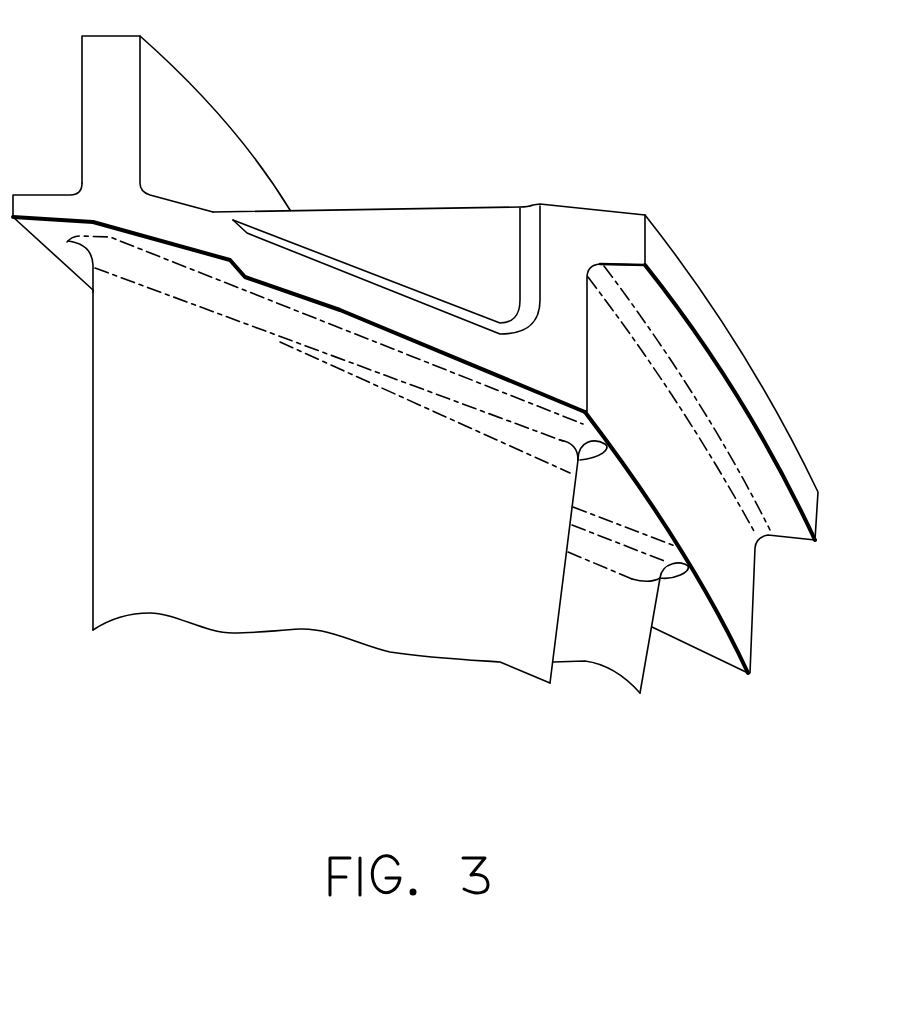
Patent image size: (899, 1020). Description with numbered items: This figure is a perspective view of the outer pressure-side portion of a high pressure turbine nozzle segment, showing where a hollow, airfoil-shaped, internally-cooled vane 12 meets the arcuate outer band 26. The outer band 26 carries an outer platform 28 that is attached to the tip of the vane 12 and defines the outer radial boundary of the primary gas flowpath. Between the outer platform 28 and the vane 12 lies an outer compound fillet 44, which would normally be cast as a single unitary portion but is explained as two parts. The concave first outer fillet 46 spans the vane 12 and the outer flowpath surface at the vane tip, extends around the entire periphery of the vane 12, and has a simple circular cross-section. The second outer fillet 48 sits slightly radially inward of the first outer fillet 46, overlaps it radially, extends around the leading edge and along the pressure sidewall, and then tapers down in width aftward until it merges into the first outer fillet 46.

The vane 12 is at (318, 603).
The outer band 26 is at (568, 222).
The outer platform 28 is at (253, 285).
The outer compound fillet 44 is at (262, 378).
The first outer fillet 46 is at (137, 265).
The second outer fillet 48 is at (480, 422).